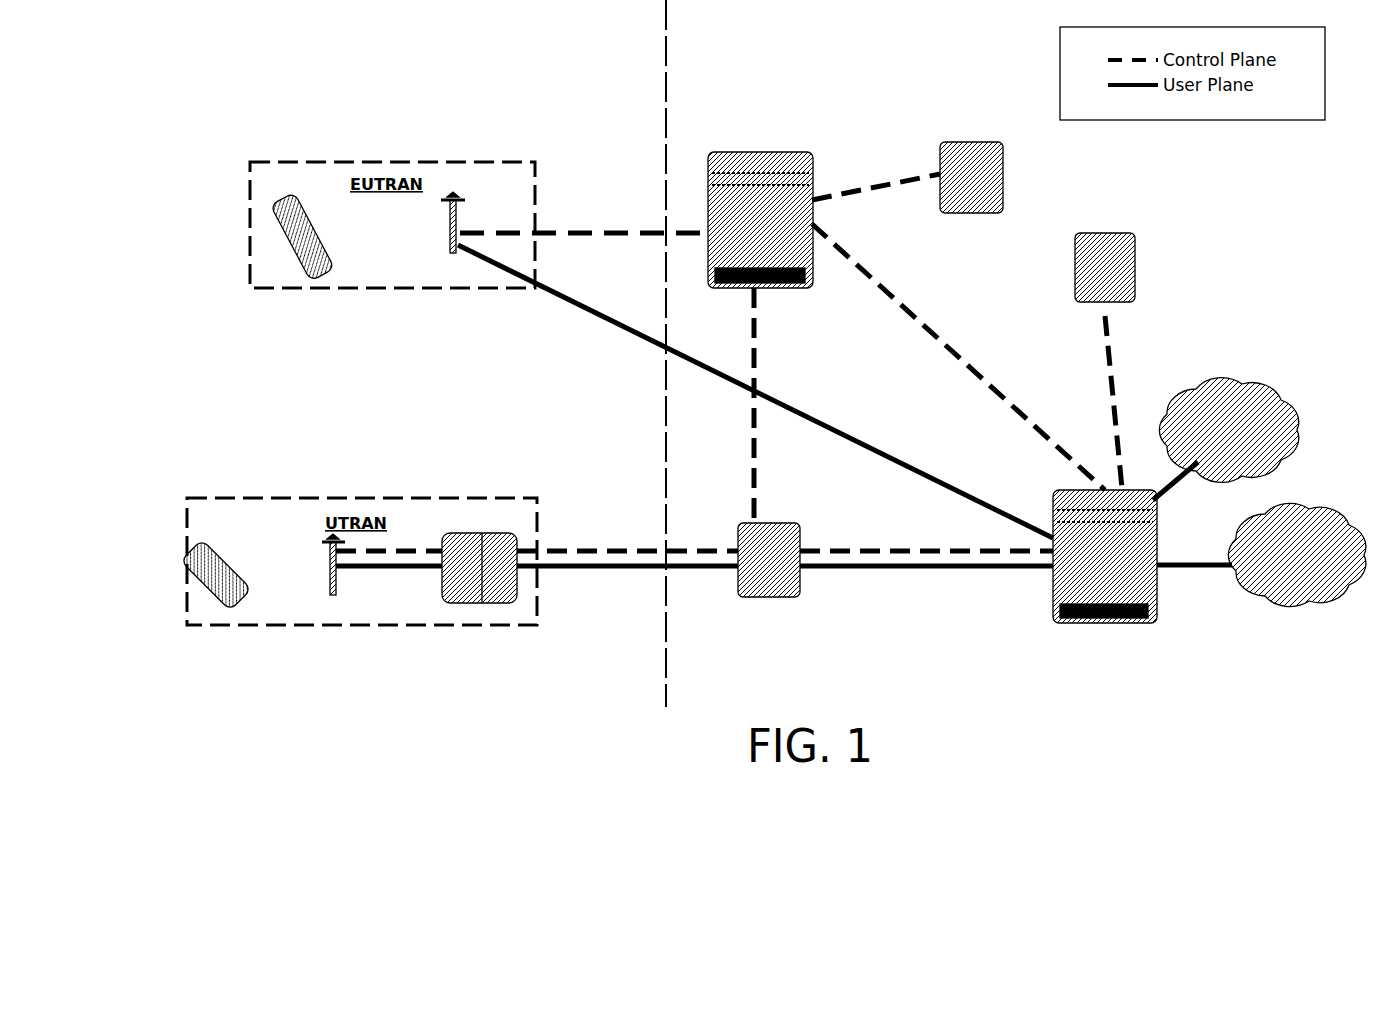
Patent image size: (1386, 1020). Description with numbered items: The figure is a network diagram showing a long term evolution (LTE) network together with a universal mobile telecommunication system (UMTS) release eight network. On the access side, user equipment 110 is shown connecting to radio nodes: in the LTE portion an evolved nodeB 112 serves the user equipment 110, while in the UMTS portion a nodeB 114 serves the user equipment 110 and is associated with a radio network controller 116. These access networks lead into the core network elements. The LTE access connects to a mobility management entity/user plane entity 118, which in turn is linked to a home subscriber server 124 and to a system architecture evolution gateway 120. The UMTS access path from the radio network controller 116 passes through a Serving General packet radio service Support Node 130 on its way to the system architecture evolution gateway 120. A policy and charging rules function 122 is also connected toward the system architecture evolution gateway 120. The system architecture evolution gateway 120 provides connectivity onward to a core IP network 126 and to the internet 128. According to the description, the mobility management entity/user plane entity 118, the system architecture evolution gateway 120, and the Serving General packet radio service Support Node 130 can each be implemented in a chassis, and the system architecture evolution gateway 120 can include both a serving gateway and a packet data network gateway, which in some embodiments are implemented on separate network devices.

The user equipment 110 is at (290, 194).
The evolved nodeB 112 is at (453, 253).
The nodeB 114 is at (336, 570).
The radio network controller 116 is at (482, 598).
The mobility management entity/user plane entity 118 is at (760, 152).
The system architecture evolution gateway 120 is at (1150, 608).
The policy and charging rules function 122 is at (1135, 272).
The home subscriber server 124 is at (973, 214).
The core IP network 126 is at (1210, 390).
The internet 128 is at (1260, 523).
The Serving General packet radio service Support Node 130 is at (800, 575).